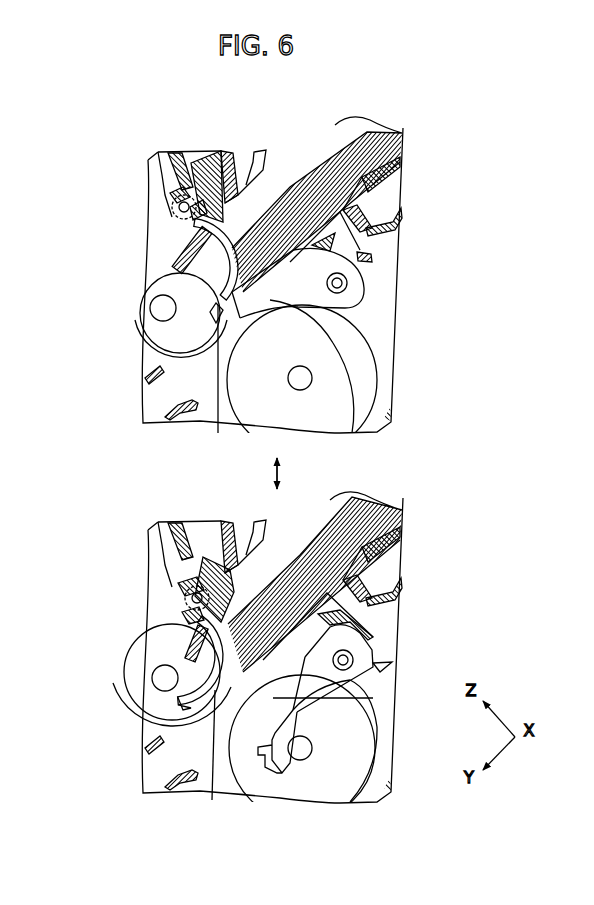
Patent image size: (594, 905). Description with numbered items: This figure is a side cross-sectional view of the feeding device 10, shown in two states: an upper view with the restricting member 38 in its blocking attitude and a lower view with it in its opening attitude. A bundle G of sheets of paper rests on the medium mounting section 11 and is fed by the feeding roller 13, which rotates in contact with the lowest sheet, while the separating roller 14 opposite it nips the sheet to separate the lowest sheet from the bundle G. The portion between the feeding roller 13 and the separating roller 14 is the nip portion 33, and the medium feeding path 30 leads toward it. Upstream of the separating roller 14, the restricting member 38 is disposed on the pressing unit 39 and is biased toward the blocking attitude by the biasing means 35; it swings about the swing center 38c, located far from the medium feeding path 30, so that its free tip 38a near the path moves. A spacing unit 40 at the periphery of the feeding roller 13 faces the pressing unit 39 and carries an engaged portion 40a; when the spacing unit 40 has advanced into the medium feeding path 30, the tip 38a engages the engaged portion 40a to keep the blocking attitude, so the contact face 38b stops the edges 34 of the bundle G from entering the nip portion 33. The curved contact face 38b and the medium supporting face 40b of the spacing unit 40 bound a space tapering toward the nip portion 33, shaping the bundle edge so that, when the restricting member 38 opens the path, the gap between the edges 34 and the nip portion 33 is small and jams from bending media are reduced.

The feeding device 10 is at (136, 171).
The medium mounting section 11 is at (366, 176).
The feeding roller 13 is at (348, 382).
The separating roller 14 is at (147, 343).
The medium feeding path 30 is at (300, 249).
The nip portion 33 is at (212, 757).
The edges 34 is at (226, 286).
The biasing means 35 is at (172, 207).
The restricting member 38 is at (222, 232).
The tip 38a is at (216, 302).
The contact face 38b is at (228, 236).
The swing center 38c is at (200, 200).
The pressing unit 39 is at (190, 248).
The spacing unit 40 is at (358, 285).
The engaged portion 40a is at (218, 433).
The medium supporting face 40b is at (333, 345).
The bundle of sheets of paper G is at (309, 155).